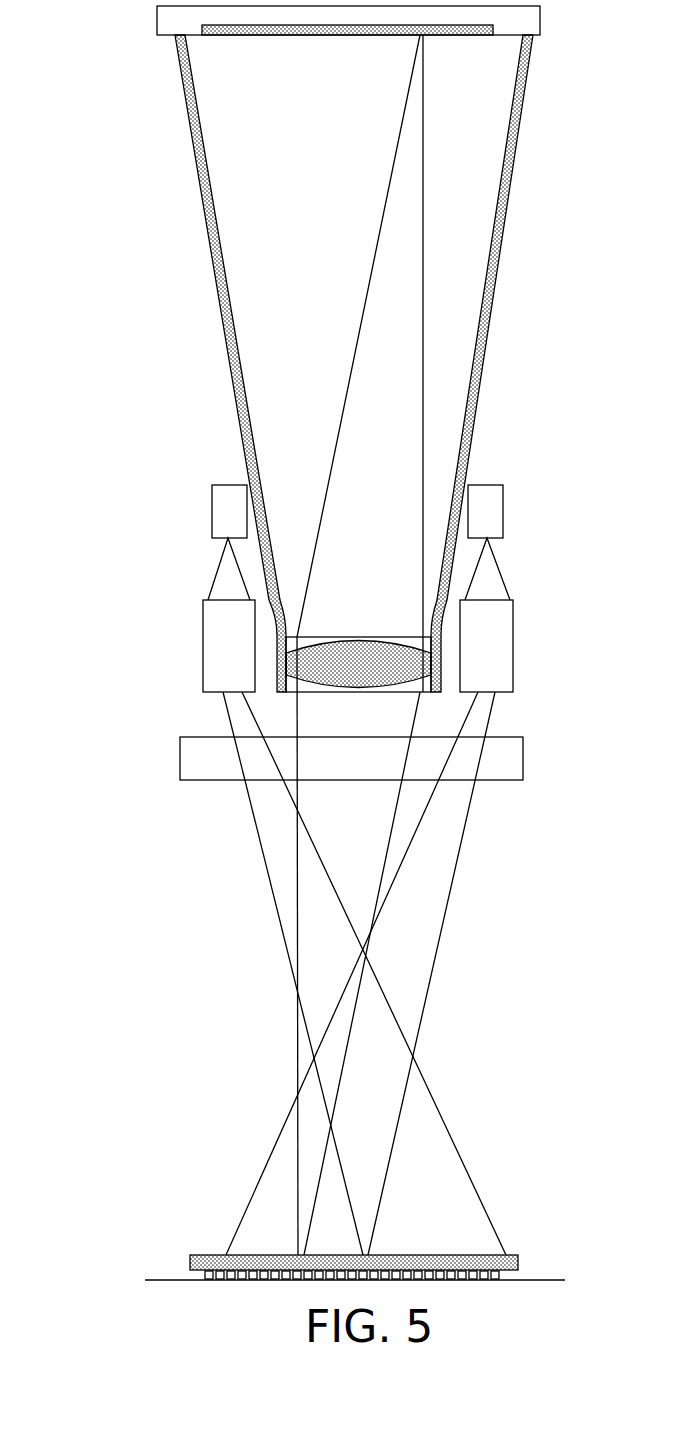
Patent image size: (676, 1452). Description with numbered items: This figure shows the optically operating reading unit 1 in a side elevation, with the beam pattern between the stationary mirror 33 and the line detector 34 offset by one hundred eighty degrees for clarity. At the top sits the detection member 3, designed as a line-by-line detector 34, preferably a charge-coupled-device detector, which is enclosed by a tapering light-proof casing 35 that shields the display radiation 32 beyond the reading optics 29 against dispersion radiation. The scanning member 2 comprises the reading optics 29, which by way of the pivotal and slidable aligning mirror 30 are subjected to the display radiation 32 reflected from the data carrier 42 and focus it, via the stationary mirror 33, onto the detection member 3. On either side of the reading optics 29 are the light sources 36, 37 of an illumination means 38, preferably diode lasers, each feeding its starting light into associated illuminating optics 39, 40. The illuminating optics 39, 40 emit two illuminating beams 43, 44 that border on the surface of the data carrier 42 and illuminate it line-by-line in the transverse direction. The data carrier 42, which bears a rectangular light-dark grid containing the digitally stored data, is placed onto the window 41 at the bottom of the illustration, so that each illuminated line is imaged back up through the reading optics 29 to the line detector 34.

The reading unit 1 is at (128, 316).
The scanning member 2 is at (107, 982).
The detection member 3 is at (118, 17).
The reading optics 29 is at (333, 637).
The aligning mirror 30 is at (510, 760).
The display radiation 32 is at (360, 838).
The stationary mirror 33 is at (405, 637).
The line-by-line detector 34 is at (525, 22).
The light-proof casing 35 is at (503, 240).
The light source 36 is at (222, 508).
The light source 37 is at (492, 510).
The illumination means 38 is at (98, 569).
The illuminating optics 39 is at (215, 640).
The illuminating optics 40 is at (497, 640).
The window 41 is at (175, 1272).
The data carrier 42 is at (518, 1280).
The illuminating beam 43 is at (265, 817).
The illuminating beam 44 is at (415, 935).